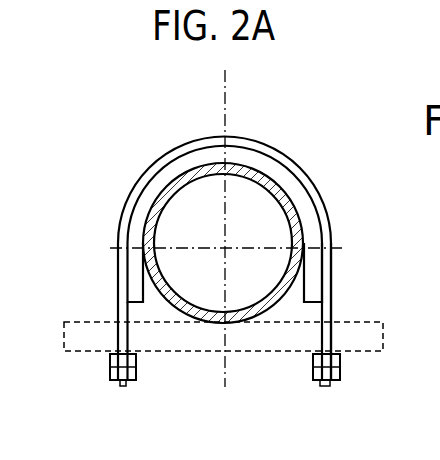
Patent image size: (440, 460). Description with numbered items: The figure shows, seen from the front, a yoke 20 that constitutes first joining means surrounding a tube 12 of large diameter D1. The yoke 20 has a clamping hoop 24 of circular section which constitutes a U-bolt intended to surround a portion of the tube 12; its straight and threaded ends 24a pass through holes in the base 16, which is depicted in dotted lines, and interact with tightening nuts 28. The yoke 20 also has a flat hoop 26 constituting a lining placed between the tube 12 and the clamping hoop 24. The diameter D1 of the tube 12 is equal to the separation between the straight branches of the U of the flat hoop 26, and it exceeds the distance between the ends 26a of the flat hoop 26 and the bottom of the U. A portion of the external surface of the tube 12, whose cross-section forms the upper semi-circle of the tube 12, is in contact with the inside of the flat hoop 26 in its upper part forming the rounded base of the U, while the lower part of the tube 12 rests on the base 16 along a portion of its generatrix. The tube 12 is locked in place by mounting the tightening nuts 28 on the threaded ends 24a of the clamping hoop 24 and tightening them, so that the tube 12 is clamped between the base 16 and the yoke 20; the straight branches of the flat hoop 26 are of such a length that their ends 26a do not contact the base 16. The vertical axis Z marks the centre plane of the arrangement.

The yoke 20 is at (221, 237).
The tube 12 is at (270, 215).
The base 16 is at (104, 332).
The clamping hoop 24 is at (233, 136).
The straight and threaded ends 24a is at (333, 338).
The flat hoop 26 is at (193, 157).
The ends of the flat hoop 26a is at (313, 293).
The tightening nuts 28 is at (112, 365).
The diameter D1 is at (267, 310).
The vertical axis Z is at (217, 228).